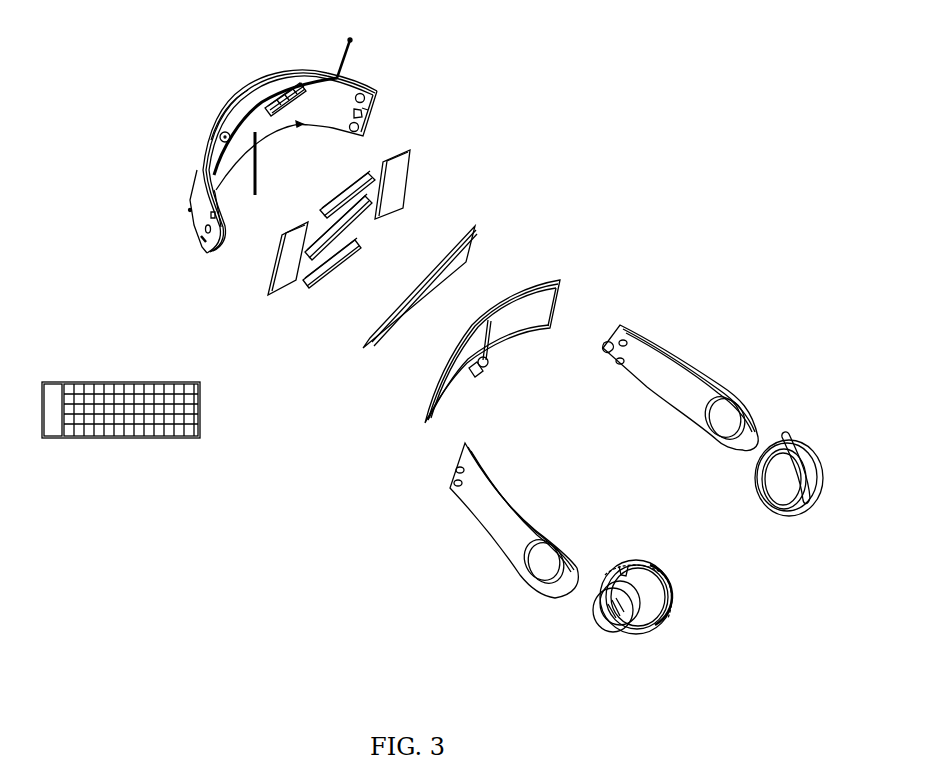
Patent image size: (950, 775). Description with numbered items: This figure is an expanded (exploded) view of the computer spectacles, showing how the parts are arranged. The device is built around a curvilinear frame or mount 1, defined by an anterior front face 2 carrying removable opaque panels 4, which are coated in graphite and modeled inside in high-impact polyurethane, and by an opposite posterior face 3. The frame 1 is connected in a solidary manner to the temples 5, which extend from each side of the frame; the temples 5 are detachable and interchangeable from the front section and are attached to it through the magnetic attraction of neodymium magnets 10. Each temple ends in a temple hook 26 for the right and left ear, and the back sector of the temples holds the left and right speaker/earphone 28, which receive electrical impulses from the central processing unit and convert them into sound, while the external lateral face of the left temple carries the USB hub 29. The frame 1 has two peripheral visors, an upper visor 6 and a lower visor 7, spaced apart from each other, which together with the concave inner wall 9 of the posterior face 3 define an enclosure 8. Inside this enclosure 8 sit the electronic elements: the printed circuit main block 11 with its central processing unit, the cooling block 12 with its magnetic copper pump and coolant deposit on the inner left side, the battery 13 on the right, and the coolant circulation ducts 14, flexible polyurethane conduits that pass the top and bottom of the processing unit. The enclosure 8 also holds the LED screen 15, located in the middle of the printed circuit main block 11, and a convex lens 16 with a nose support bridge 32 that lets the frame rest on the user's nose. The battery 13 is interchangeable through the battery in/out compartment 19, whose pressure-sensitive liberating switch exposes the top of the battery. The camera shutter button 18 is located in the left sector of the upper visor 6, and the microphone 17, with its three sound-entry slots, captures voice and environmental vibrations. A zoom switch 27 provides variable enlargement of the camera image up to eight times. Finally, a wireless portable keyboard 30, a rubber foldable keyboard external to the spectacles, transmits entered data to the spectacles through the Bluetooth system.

The frame or mount 1 is at (306, 70).
The front face 2 is at (190, 160).
The posterior face 3 is at (318, 148).
The removable opaque panels 4 is at (198, 197).
The temples 5 is at (660, 376).
The upper visor 6 is at (247, 118).
The lower visor 7 is at (215, 193).
The enclosure 8 is at (276, 140).
The inner wall of the posterior face 9 is at (255, 167).
The neodymium magnets 10 is at (366, 114).
The printed circuit main block 11 is at (356, 226).
The cooling block 12 is at (290, 276).
The battery 13 is at (398, 193).
The coolant circulation ducts 14 is at (330, 198).
The LED screen 15 is at (438, 278).
The convex lens 16 is at (520, 325).
The microphone 17 is at (190, 211).
The camera shutter button 18 is at (216, 135).
The battery in/out compartment 19 is at (282, 72).
The temple hooks for right and left ear 26 is at (796, 436).
The zoom switch 27 is at (612, 628).
The speaker/earphone left and right 28 is at (777, 478).
The USB hub 29 is at (451, 475).
The wireless portable keyboard 30 is at (97, 382).
The nose support bridge 32 is at (487, 364).